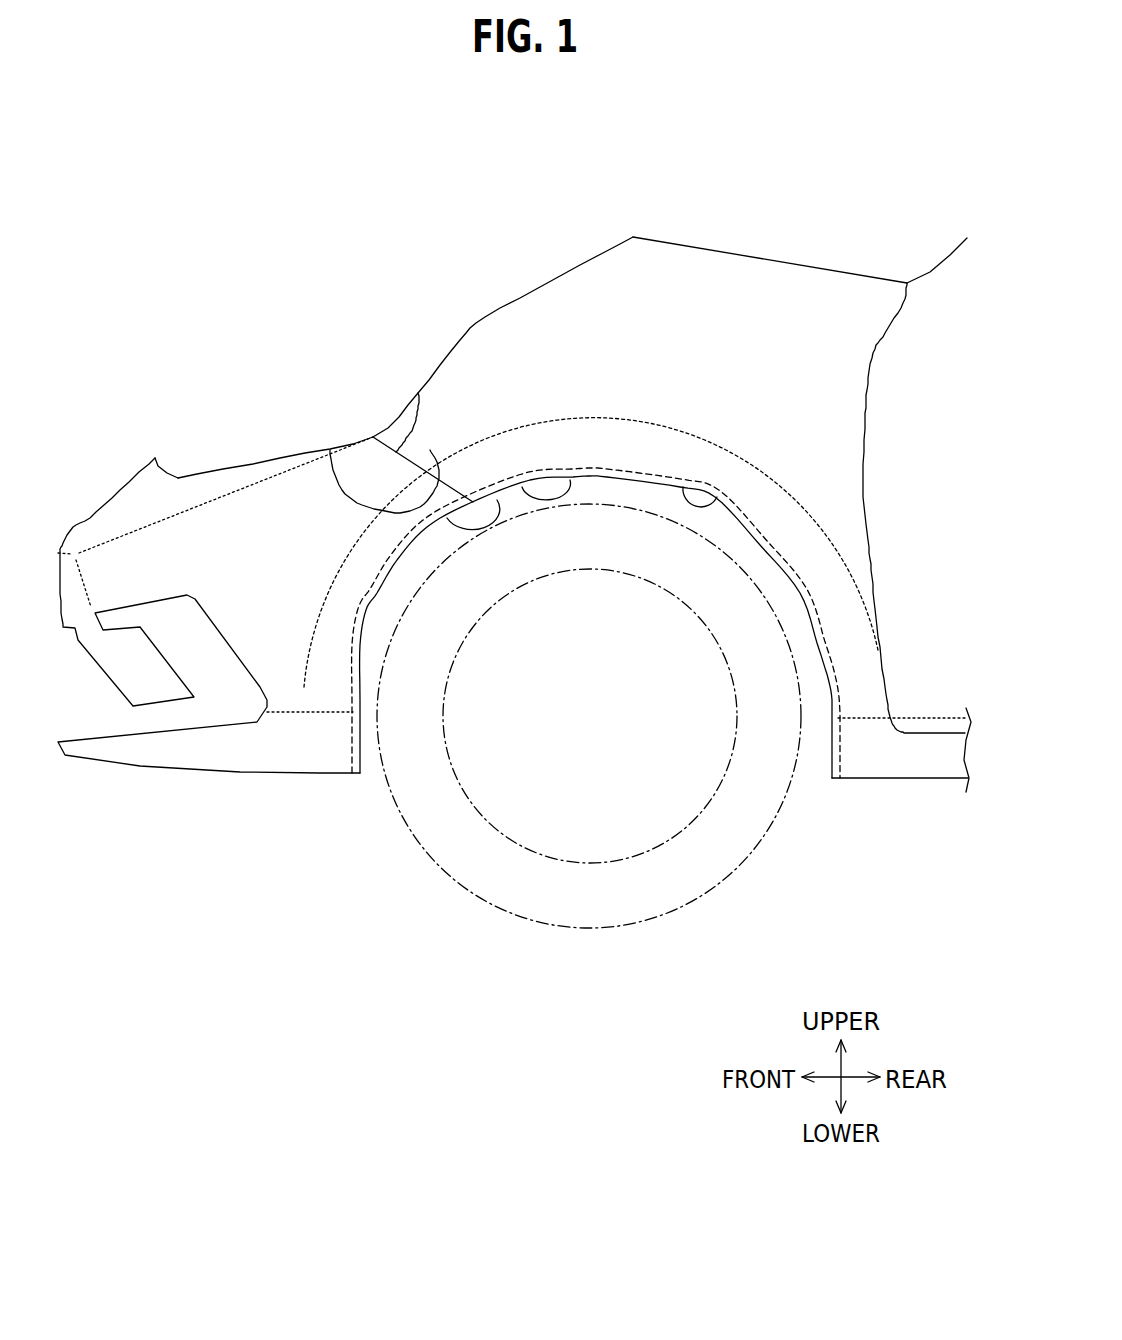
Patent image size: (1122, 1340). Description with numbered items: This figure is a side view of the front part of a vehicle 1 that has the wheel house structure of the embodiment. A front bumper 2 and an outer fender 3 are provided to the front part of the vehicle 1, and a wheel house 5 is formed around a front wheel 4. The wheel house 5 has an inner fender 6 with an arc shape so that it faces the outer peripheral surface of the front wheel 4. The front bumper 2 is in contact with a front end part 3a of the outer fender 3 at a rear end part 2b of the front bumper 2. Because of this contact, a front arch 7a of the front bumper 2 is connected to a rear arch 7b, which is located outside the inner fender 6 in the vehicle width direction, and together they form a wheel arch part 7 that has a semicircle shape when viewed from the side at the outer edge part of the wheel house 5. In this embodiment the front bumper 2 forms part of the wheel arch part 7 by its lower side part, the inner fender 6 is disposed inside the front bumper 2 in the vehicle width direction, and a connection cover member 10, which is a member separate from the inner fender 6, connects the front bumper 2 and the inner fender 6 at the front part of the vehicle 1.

The vehicle 1 is at (841, 82).
The front bumper 2 is at (290, 693).
The rear end part 2b is at (418, 393).
The outer fender 3 is at (673, 267).
The front end part 3a is at (330, 450).
The front wheel 4 is at (767, 837).
The wheel house 5 is at (610, 478).
The inner fender 6 is at (717, 493).
The wheel arch part 7 is at (518, 177).
The front arch 7a is at (497, 498).
The rear arch 7b is at (570, 480).
The connection cover member 10 is at (370, 637).